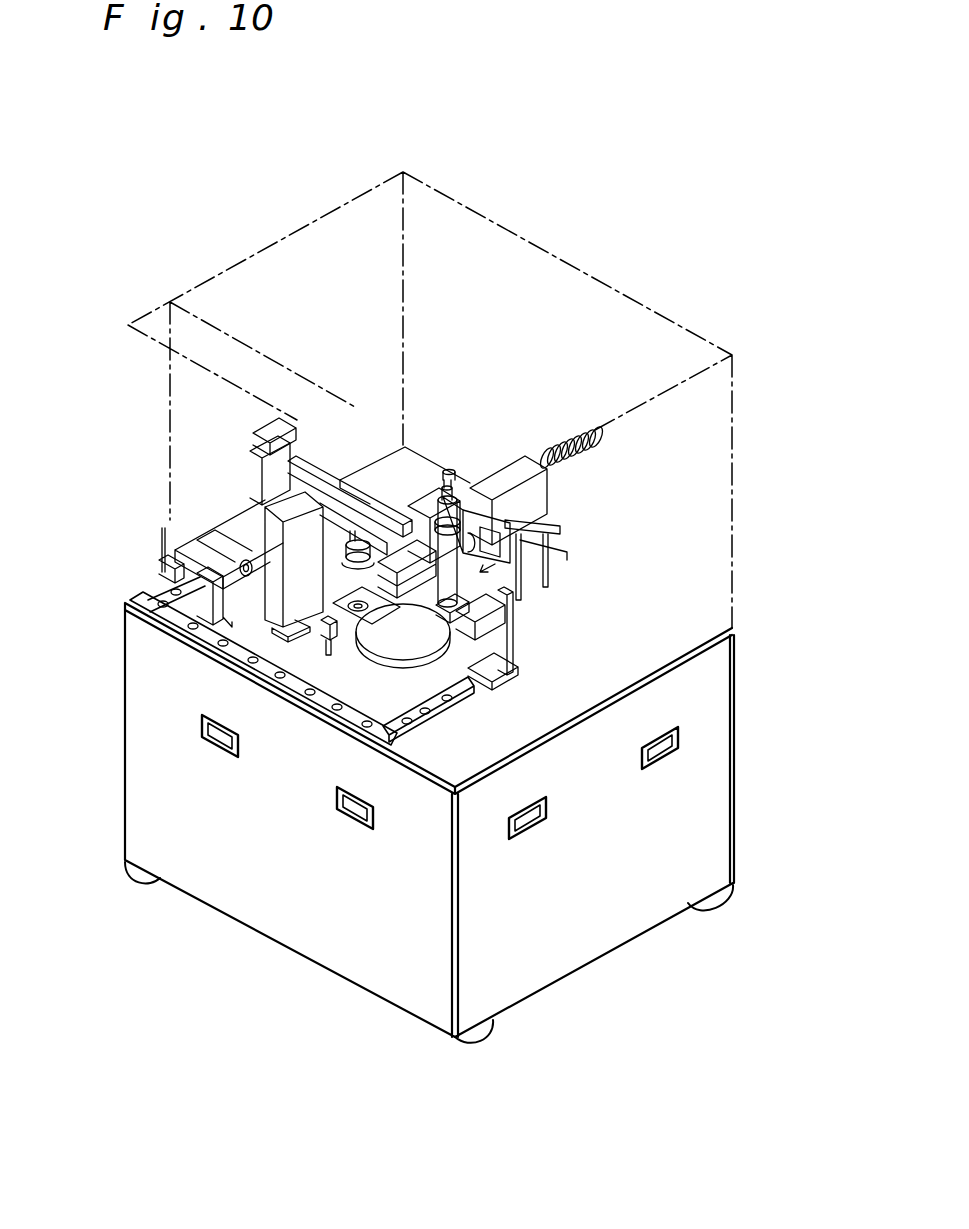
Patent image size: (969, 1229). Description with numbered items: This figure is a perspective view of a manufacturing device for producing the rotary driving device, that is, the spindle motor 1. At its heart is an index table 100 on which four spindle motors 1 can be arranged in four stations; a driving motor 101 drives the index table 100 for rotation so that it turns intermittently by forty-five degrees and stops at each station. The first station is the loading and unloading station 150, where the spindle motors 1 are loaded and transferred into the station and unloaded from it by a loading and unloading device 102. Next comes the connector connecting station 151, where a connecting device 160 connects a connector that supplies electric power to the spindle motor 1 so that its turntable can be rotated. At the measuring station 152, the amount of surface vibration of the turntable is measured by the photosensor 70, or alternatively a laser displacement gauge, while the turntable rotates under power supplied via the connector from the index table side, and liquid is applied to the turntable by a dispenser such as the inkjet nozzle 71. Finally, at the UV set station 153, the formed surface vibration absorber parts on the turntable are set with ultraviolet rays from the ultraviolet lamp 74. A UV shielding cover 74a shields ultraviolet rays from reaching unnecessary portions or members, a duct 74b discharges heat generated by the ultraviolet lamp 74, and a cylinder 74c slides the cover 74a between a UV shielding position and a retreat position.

The spindle motor 1 is at (430, 683).
The index table 100 is at (460, 652).
The driving motor 101 is at (362, 655).
The loading and unloading device 102 is at (257, 466).
The loading and unloading station 150 is at (205, 513).
The connector connecting station 151 is at (327, 625).
The measuring station 152 is at (510, 636).
The UV set station 153 is at (563, 545).
The connecting device 160 is at (350, 632).
The photosensor 70 is at (512, 600).
The inkjet nozzle 71 is at (555, 560).
The ultraviolet lamp 74 is at (507, 467).
The UV shielding cover 74a is at (430, 530).
The duct 74b is at (553, 450).
The cylinder 74c is at (565, 478).